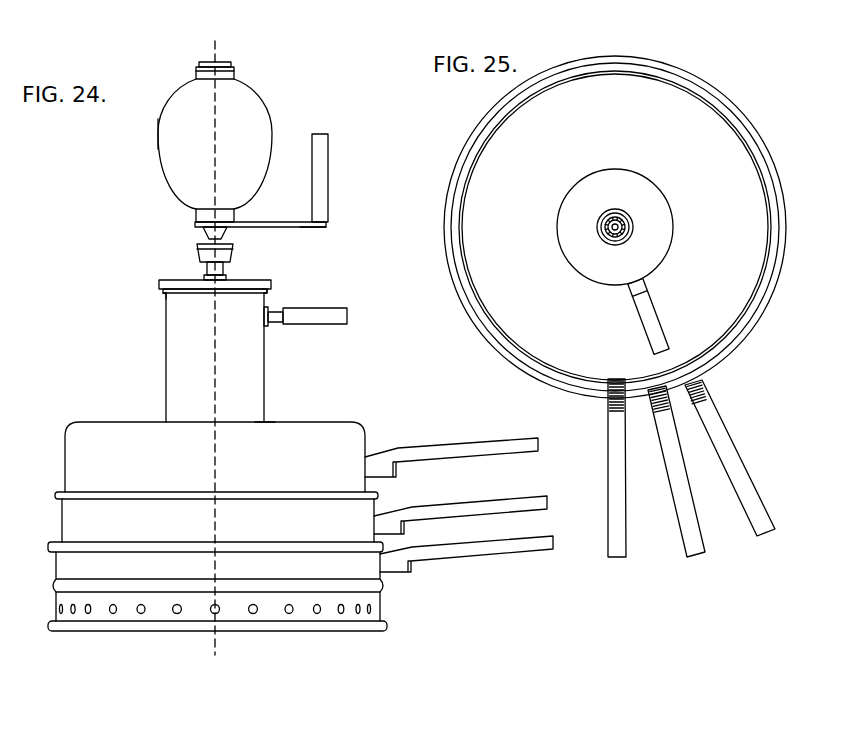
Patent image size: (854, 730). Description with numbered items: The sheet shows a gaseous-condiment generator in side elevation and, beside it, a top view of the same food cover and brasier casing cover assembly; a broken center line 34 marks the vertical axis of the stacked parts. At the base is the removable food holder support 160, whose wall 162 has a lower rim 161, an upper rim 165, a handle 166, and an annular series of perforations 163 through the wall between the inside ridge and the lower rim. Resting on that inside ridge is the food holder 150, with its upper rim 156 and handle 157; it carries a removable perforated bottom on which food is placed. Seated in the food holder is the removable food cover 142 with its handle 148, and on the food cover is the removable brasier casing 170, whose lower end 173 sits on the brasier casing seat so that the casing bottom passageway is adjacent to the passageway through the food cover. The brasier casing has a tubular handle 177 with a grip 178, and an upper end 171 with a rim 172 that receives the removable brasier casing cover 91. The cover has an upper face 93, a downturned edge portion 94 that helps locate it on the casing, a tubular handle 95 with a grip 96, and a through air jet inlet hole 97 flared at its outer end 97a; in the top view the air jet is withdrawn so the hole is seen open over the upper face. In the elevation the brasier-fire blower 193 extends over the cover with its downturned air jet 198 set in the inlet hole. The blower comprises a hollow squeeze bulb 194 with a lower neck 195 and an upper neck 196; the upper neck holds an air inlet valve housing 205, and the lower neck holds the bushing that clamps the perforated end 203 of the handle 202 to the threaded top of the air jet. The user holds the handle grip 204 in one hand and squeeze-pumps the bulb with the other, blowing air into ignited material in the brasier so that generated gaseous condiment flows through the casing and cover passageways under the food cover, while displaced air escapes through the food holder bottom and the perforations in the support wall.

In FIG. 24, the central axis line 34 is at (238, 44).
In FIG. 24, the brasier casing cover 91 is at (170, 280).
In FIG. 25, the brasier casing cover 91 is at (647, 184).
In FIG. 25, the upper face 93 is at (600, 196).
In FIG. 24, the downturned edge portion 94 is at (160, 290).
In FIG. 24, the tubular handle 95 is at (224, 273).
In FIG. 24, the grip 96 is at (197, 253).
In FIG. 25, the grip 96 is at (607, 227).
In FIG. 25, the air jet inlet hole 97 is at (619, 232).
In FIG. 25, the flared outer end 97a is at (606, 242).
In FIG. 24, the food cover 142 is at (90, 422).
In FIG. 25, the food cover 142 is at (655, 97).
In FIG. 24, the handle 148 is at (458, 439).
In FIG. 25, the handle 148 is at (628, 549).
In FIG. 24, the food holder 150 is at (376, 508).
In FIG. 25, the food holder 150 is at (590, 68).
In FIG. 24, the upper rim 156 is at (55, 497).
In FIG. 25, the upper rim 156 is at (492, 127).
In FIG. 24, the handle 157 is at (487, 494).
In FIG. 25, the handle 157 is at (706, 543).
In FIG. 24, the food holder support 160 is at (115, 635).
In FIG. 25, the food holder support 160 is at (725, 99).
In FIG. 24, the lower rim 161 is at (389, 628).
In FIG. 24, the wall 162 is at (381, 600).
In FIG. 24, the perforations 163 is at (316, 615).
In FIG. 24, the upper rim 165 is at (383, 555).
In FIG. 25, the upper rim 165 is at (752, 335).
In FIG. 24, the handle 166 is at (498, 560).
In FIG. 25, the handle 166 is at (734, 438).
In FIG. 24, the brasier casing 170 is at (166, 353).
In FIG. 24, the upper end 171 is at (268, 298).
In FIG. 24, the rim 172 is at (165, 298).
In FIG. 24, the lower end 173 is at (265, 422).
In FIG. 24, the tubular handle 177 is at (278, 326).
In FIG. 25, the tubular handle 177 is at (648, 288).
In FIG. 24, the grip 178 is at (325, 326).
In FIG. 25, the grip 178 is at (640, 335).
In FIG. 24, the brasier-fire blower 193 is at (268, 116).
In FIG. 24, the squeeze bulb 194 is at (158, 138).
In FIG. 24, the lower neck 195 is at (196, 216).
In FIG. 24, the upper neck 196 is at (233, 72).
In FIG. 24, the air jet 198 is at (227, 239).
In FIG. 24, the handle 202 is at (308, 232).
In FIG. 24, the perforated end 203 is at (195, 226).
In FIG. 24, the handle grip 204 is at (329, 175).
In FIG. 24, the air inlet valve housing 205 is at (224, 64).